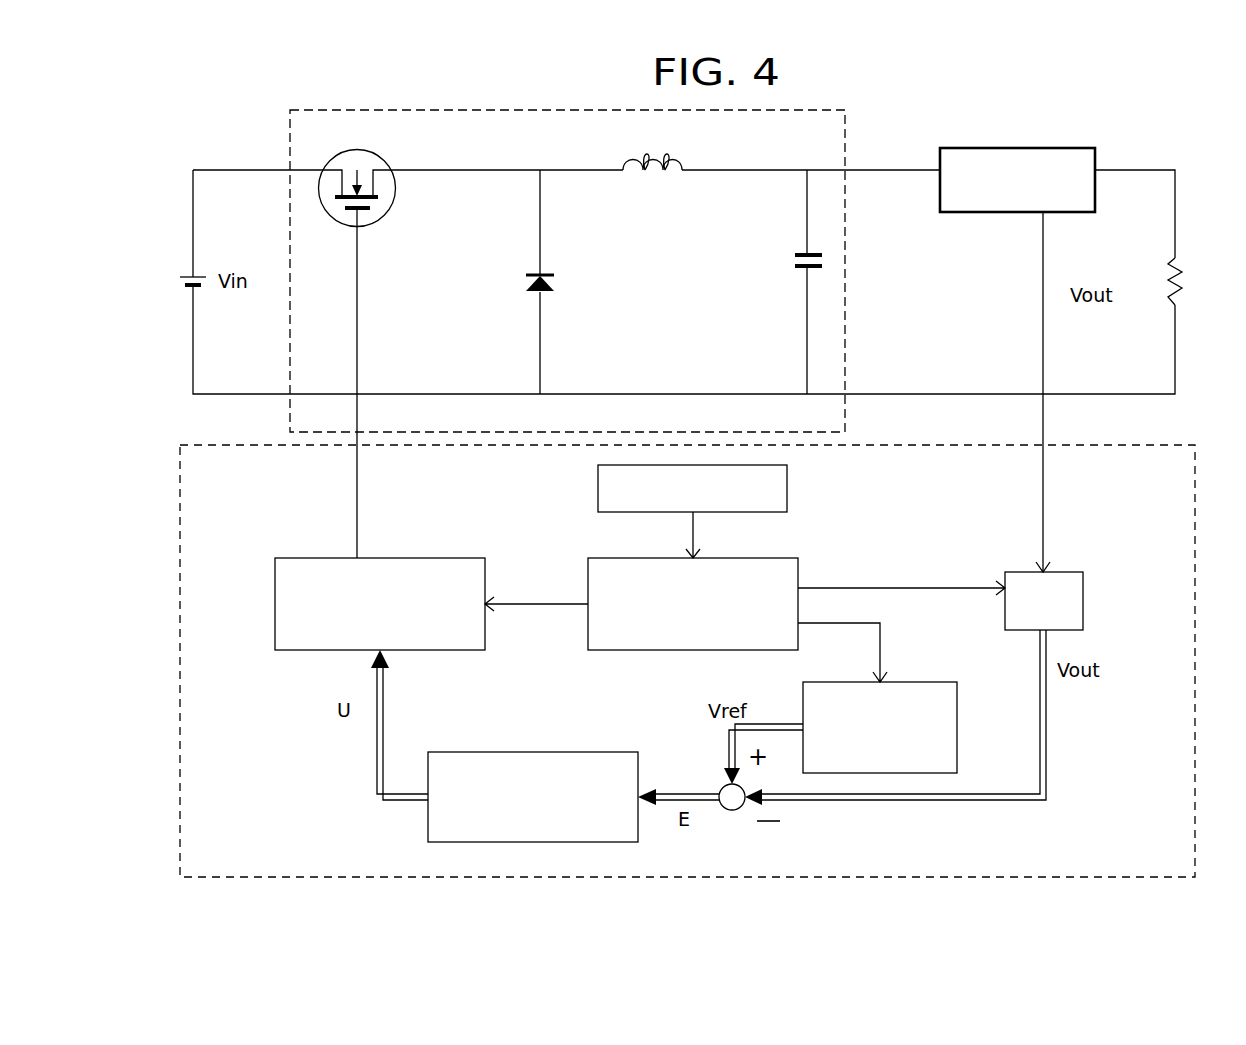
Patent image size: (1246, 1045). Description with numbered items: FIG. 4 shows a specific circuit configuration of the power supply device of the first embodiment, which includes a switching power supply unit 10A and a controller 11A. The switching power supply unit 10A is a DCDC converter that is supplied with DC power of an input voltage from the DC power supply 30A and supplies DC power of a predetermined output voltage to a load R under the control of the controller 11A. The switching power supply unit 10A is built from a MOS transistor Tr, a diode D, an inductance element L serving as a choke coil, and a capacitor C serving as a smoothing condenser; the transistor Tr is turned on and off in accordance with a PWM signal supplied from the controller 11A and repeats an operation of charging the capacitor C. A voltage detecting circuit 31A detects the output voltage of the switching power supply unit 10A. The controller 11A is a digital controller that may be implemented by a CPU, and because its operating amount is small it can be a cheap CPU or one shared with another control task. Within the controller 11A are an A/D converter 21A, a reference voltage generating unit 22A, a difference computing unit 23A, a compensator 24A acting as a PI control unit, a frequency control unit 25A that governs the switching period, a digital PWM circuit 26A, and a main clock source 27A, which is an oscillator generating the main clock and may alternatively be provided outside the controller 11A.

The switching power supply unit 10A is at (845, 142).
The controller 11A is at (1178, 445).
The A/D converter 21A is at (1085, 590).
The reference voltage generating unit 22A is at (958, 700).
The difference computing unit 23A is at (728, 811).
The compensator 24A is at (587, 751).
The frequency control unit 25A is at (650, 651).
The digital PWM circuit 26A is at (450, 557).
The main clock source 27A is at (597, 488).
The DC power supply 30A is at (183, 262).
The voltage detecting circuit 31A is at (1097, 152).
The MOS transistor Tr is at (383, 161).
The inductance element L is at (683, 160).
The diode D is at (556, 285).
The capacitor C is at (792, 258).
The load R is at (1185, 263).